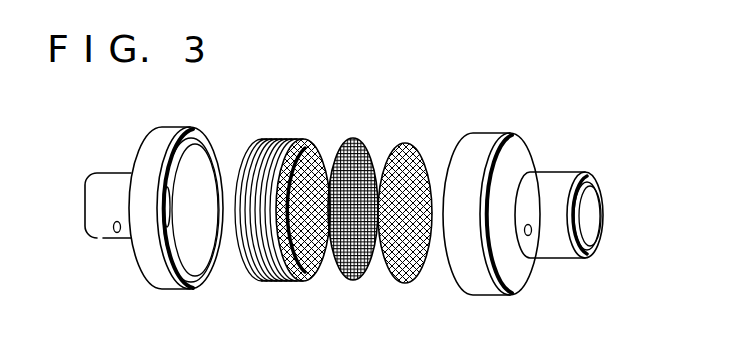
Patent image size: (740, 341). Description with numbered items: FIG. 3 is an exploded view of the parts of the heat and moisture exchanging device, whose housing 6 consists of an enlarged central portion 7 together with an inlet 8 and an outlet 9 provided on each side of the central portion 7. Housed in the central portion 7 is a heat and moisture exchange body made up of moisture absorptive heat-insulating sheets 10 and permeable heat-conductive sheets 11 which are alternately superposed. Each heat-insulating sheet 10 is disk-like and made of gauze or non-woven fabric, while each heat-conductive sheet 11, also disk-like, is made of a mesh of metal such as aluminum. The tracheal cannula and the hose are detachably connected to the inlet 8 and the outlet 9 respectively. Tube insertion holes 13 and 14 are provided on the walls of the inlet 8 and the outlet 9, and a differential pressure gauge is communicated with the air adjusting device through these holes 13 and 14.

The filter assembly 6 is at (143, 124).
The central portion 7 is at (163, 278).
The inlet 8 is at (103, 241).
The outlet 9 is at (555, 250).
The moisture absorptive heat-insulating sheet 10 is at (312, 281).
The permeable heat-conductive sheet 11 is at (357, 277).
The tube insertion hole 13 is at (530, 225).
The tube insertion hole 14 is at (115, 220).